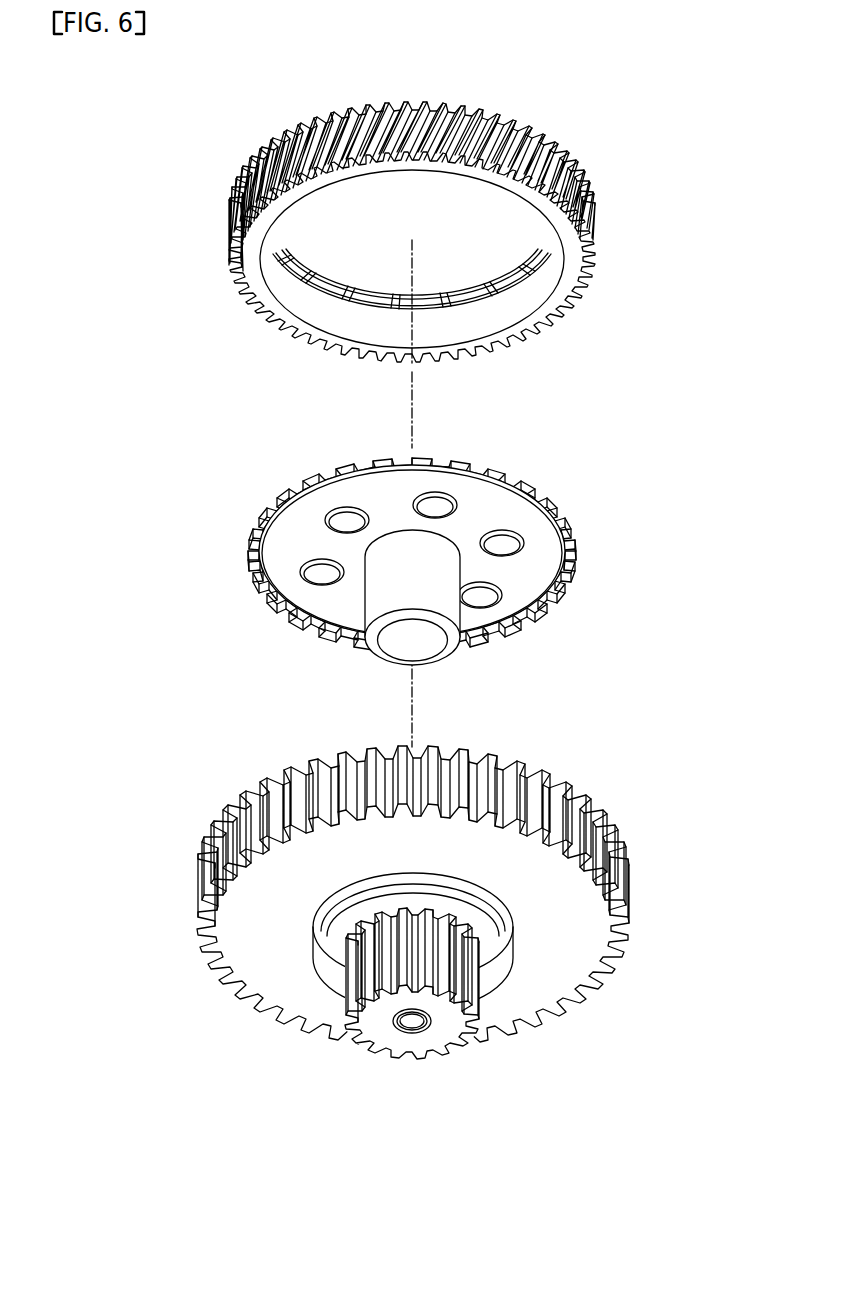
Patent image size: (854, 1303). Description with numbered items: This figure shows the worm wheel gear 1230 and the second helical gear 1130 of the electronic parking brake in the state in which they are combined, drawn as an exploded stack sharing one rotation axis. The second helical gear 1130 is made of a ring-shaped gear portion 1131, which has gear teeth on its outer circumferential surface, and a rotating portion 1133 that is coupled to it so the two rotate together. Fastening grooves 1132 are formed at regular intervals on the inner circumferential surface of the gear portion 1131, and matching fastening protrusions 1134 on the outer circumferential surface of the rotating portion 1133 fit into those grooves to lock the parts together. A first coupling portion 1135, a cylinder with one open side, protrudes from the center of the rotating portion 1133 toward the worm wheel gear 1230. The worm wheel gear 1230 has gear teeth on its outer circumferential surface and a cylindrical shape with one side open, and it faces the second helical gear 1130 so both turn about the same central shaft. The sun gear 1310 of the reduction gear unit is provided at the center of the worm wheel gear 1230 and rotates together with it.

The second helical gear 1130 is at (133, 352).
The gear portion 1131 is at (248, 293).
The fastening grooves 1132 is at (502, 288).
The rotating portion 1133 is at (311, 507).
The fastening protrusions 1134 is at (548, 492).
The first coupling portion 1135 is at (450, 617).
The worm wheel gear 1230 is at (600, 853).
The sun gear 1310 is at (411, 1046).